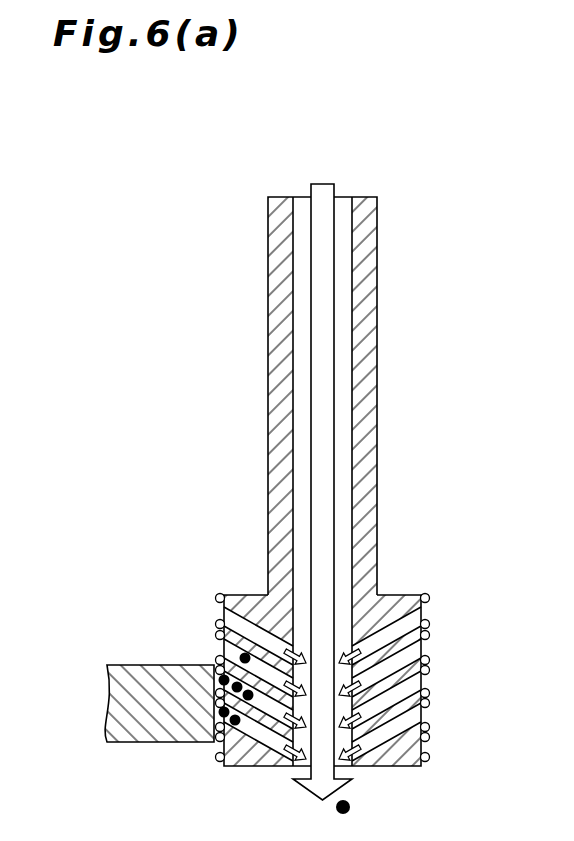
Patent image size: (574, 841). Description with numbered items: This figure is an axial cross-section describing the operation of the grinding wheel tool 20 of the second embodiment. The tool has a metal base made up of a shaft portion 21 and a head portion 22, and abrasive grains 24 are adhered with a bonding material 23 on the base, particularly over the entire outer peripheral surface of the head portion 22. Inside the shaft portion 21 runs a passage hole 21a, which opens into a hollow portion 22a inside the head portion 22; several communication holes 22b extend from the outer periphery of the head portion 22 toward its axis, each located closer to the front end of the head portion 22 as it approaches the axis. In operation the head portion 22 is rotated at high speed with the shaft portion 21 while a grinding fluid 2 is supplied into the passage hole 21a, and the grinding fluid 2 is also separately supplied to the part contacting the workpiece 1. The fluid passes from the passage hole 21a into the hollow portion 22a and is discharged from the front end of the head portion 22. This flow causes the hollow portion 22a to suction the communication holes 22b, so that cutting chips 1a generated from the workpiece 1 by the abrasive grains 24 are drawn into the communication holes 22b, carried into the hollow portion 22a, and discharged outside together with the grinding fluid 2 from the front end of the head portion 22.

The grinding wheel tool 20 is at (231, 171).
The grinding fluid 2 is at (322, 479).
The shaft portion 21 is at (380, 317).
The passage hole 21a is at (353, 211).
The head portion 22 is at (400, 595).
The hollow portion 22a is at (302, 612).
The communication holes 22b is at (405, 728).
The bonding material 23 is at (428, 659).
The abrasive grains 24 is at (430, 693).
The workpiece 1 is at (135, 665).
The cutting chips 1a is at (350, 803).